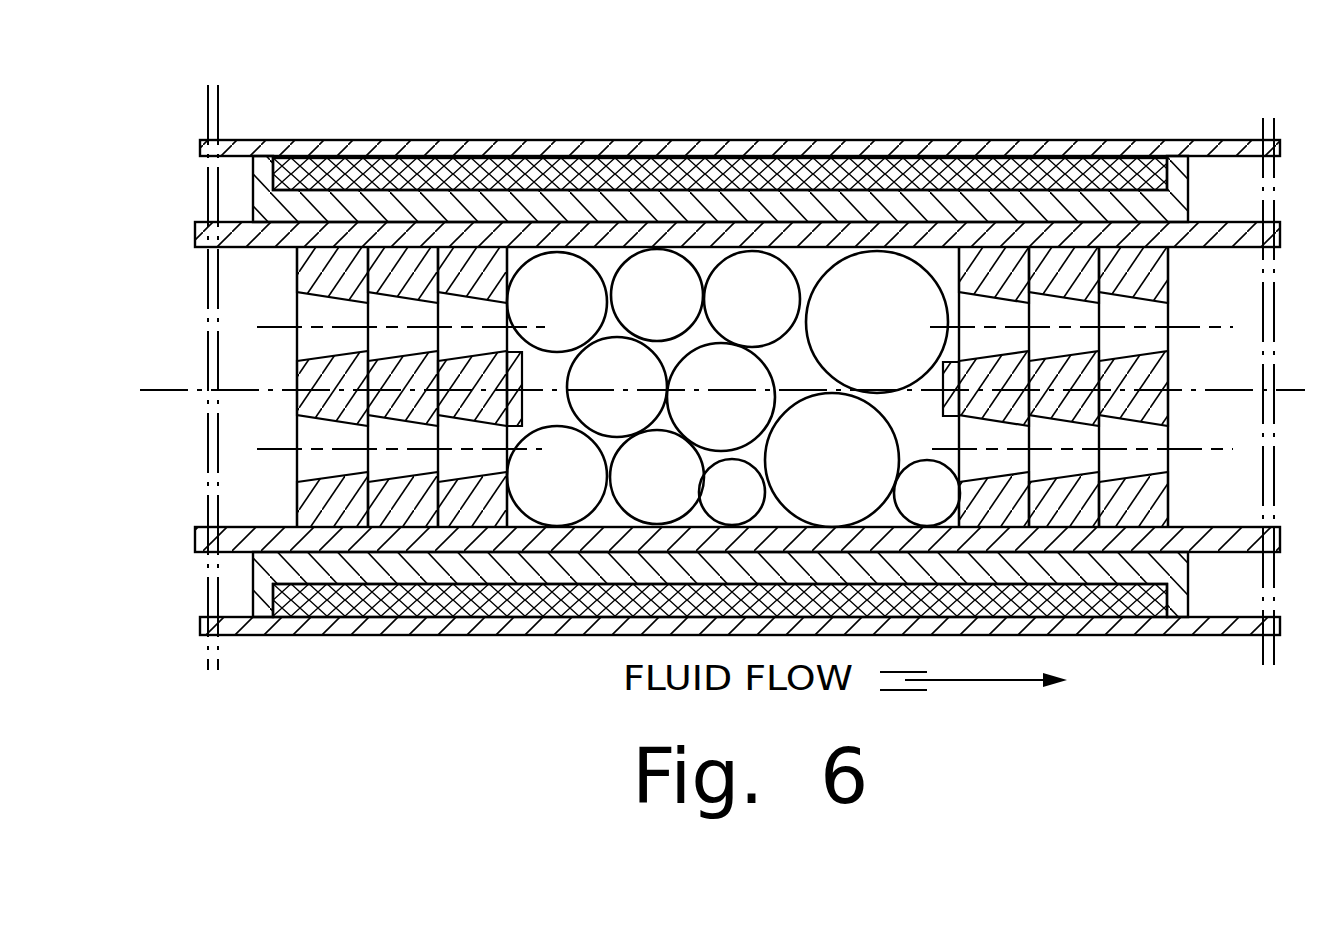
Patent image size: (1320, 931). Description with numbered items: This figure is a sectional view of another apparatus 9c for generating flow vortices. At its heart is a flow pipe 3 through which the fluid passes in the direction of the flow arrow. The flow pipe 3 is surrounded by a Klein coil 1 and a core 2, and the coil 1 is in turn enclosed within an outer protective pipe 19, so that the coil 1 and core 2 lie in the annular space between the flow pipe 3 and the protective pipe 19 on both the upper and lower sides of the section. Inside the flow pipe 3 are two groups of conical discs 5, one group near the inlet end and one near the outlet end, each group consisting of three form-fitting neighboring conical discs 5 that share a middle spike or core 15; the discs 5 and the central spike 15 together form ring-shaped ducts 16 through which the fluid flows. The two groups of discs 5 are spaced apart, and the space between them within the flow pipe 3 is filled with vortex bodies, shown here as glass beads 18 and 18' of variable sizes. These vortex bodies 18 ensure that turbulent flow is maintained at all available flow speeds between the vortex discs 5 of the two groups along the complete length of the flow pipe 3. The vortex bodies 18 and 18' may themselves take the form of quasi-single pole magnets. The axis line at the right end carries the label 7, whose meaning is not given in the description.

The Klein coil 1 is at (533, 170).
The core 2 is at (350, 203).
The flow pipe 3 is at (270, 232).
The conical discs 5 is at (307, 280).
The axis / outlet 7 is at (1290, 392).
The apparatus 9c is at (1165, 92).
The middle spike or core 15 is at (307, 403).
The ring-shaped ducts 16 is at (307, 461).
The glass beads 18 is at (733, 472).
The glass beads 18' is at (877, 239).
The outer protective pipe 19 is at (655, 150).